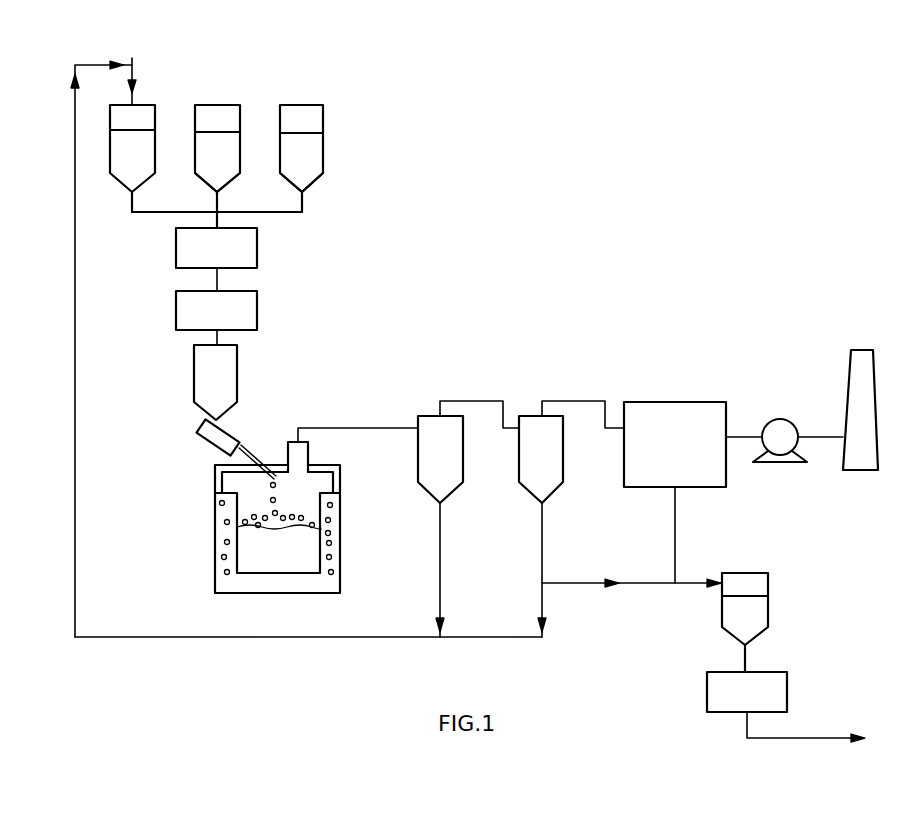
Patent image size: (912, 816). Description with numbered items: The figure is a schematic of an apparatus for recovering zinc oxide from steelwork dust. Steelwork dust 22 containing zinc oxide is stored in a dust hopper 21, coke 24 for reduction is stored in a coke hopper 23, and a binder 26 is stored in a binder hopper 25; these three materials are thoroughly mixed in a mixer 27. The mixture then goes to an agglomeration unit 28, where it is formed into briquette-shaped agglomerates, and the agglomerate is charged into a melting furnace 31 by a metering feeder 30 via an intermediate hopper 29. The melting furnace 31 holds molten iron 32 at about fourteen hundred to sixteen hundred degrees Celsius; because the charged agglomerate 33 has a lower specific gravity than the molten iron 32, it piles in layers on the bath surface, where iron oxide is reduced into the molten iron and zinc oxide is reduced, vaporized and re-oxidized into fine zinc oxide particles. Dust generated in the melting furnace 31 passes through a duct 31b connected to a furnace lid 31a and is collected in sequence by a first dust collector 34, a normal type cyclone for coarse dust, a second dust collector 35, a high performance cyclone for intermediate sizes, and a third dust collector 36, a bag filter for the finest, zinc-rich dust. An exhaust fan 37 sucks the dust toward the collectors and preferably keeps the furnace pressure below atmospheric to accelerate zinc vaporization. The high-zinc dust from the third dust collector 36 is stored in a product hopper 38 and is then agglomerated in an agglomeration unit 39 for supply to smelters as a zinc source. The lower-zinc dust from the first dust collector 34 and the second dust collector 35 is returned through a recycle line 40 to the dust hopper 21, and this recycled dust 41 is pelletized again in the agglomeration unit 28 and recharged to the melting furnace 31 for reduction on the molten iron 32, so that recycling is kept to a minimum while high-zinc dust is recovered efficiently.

The dust hopper 21 is at (148, 105).
The steelwork dust 22 is at (133, 58).
The coke hopper 23 is at (228, 183).
The coke 24 is at (217, 130).
The binder hopper 25 is at (315, 183).
The binder 26 is at (308, 133).
The mixer 27 is at (258, 253).
The agglomeration unit 28 is at (258, 312).
The intermediate hopper 29 is at (194, 366).
The metering feeder 30 is at (198, 428).
The melting furnace 31 is at (340, 578).
The furnace lid 31a is at (277, 466).
The duct 31b is at (330, 428).
The molten iron 32 is at (313, 553).
The agglomerate 33 is at (278, 500).
The first dust collector 34 is at (427, 415).
The second dust collector 35 is at (527, 415).
The third dust collector 36 is at (655, 402).
The exhaust fan 37 is at (781, 418).
The product hopper 38 is at (770, 611).
The agglomeration unit 39 is at (706, 695).
The recycle line 40 is at (287, 640).
The recycled dust 41 is at (92, 63).